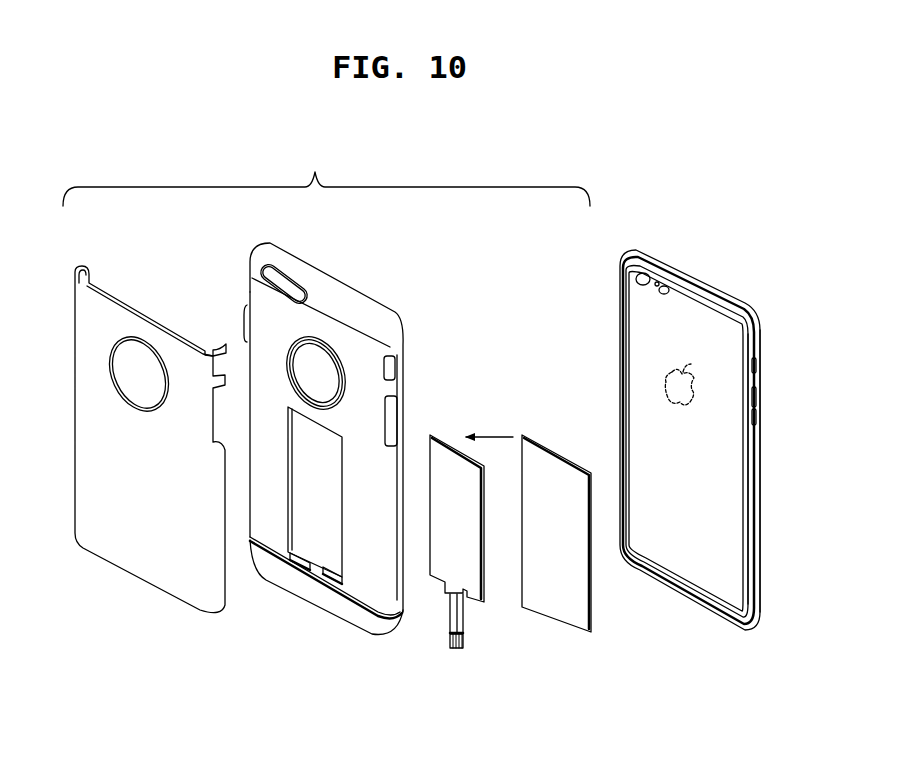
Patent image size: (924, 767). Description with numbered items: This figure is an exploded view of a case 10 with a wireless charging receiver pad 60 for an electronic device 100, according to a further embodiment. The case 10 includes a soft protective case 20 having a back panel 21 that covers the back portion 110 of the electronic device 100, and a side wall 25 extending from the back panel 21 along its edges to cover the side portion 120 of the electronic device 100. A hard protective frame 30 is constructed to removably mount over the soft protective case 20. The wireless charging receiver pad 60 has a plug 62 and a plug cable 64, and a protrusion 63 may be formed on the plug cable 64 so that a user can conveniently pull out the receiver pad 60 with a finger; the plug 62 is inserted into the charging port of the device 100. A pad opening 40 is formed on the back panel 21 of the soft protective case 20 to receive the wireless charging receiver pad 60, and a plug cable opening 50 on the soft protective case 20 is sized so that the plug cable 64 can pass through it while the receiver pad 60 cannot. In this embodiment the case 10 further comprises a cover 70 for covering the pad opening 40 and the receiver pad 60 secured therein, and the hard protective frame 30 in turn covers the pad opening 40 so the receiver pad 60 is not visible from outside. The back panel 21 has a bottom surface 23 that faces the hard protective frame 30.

The case 10 is at (330, 159).
The soft protective case 20 is at (364, 247).
The back panel 21 is at (323, 338).
The bottom surface 23 is at (355, 405).
The side wall 25 is at (385, 580).
The hard protective frame 30 is at (165, 252).
The pad opening 40 is at (303, 520).
The plug cable opening 50 is at (316, 577).
The wireless charging receiver pad 60 is at (474, 411).
The plug 62 is at (460, 650).
The protrusion 63 is at (463, 640).
The plug cable 64 is at (453, 613).
The cover 70 is at (598, 446).
The electronic device 100 is at (690, 219).
The back portion 110 is at (683, 333).
The side portion 120 is at (755, 542).